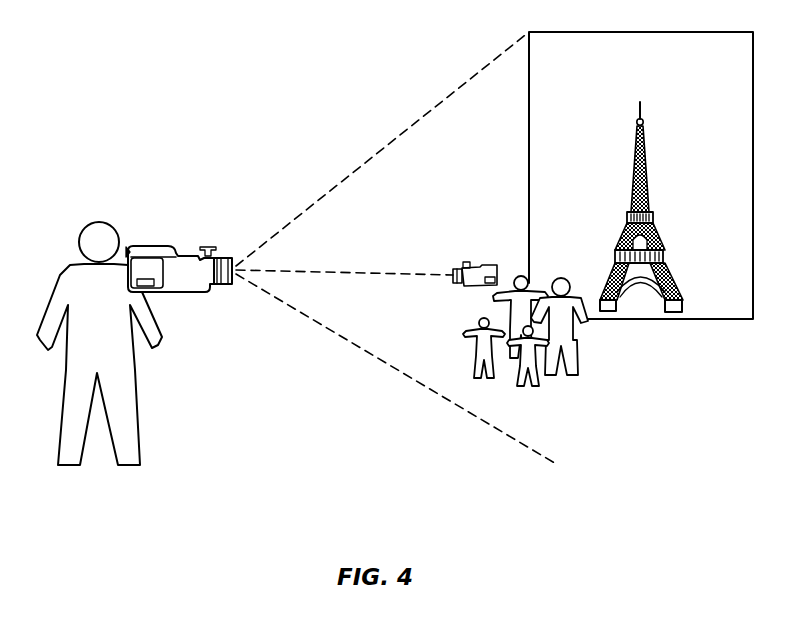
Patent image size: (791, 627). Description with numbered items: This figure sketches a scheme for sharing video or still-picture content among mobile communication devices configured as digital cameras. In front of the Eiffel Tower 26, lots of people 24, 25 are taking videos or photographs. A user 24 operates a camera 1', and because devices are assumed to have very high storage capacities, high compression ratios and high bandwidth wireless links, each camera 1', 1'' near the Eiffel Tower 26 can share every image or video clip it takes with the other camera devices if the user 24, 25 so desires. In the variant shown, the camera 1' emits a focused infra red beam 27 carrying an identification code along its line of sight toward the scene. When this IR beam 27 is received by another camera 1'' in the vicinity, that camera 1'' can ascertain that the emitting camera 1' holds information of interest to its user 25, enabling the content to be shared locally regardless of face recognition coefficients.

The user 24 is at (92, 240).
The camera 1' is at (179, 241).
The focused infra red beam 27 is at (353, 268).
The camera 1'' is at (486, 247).
The Eiffel Tower 26 is at (637, 121).
The user 25 is at (575, 389).